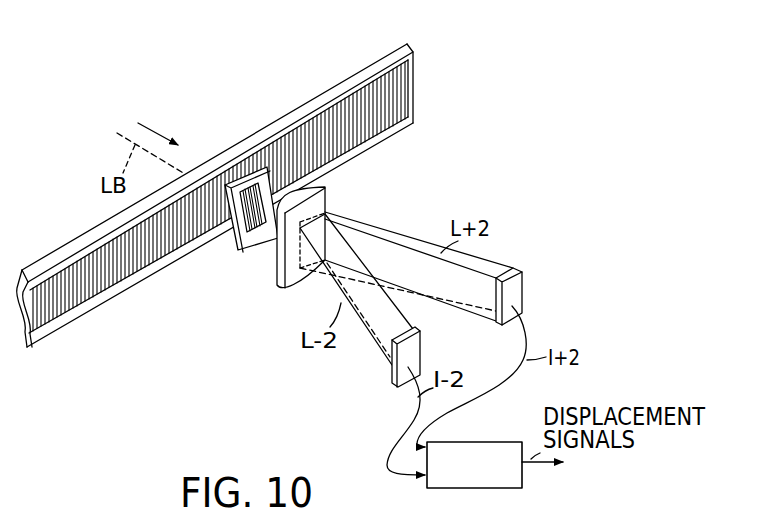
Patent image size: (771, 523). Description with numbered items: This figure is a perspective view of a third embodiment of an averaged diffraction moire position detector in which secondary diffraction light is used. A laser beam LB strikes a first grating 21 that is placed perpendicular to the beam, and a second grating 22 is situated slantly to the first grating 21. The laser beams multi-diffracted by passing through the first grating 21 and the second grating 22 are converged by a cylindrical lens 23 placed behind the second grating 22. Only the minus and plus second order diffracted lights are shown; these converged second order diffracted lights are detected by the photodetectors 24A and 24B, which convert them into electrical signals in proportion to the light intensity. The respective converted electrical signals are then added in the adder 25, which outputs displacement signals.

The first grating 21 is at (427, 42).
The second grating 22 is at (235, 250).
The cylindrical lens 23 is at (326, 189).
The photodetector 24A is at (513, 268).
The photodetector 24B is at (390, 374).
The adder 25 is at (476, 441).